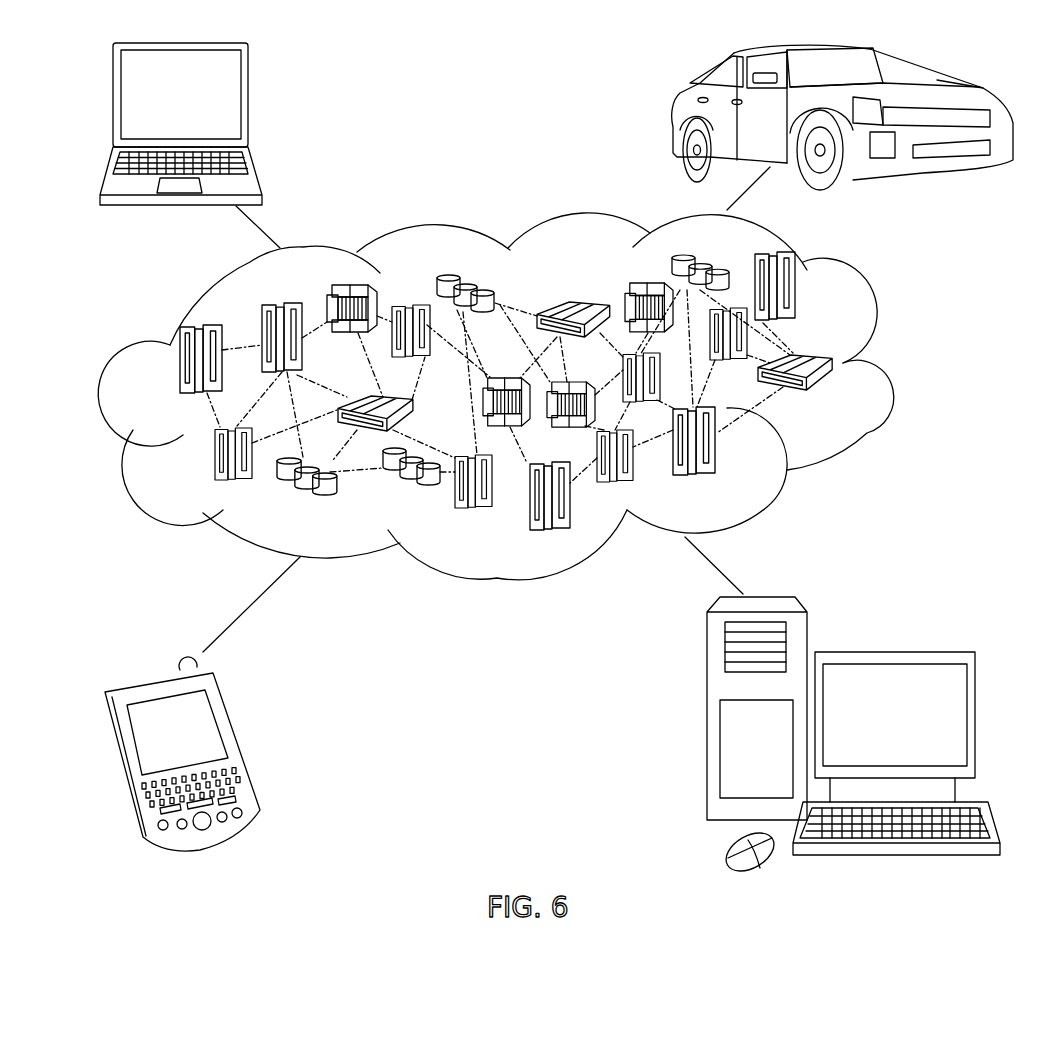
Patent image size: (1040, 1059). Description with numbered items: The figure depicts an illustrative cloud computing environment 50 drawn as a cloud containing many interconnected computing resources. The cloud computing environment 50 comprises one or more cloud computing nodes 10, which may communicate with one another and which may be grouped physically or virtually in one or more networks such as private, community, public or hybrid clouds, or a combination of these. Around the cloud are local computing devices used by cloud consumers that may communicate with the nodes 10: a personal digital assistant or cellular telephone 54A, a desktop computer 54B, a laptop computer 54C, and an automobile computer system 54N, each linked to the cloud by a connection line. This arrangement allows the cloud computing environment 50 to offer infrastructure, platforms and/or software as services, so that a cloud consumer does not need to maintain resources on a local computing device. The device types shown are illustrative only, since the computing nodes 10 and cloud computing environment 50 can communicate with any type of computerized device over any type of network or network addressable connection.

The cloud computing environment 50 is at (524, 396).
The cloud computing node 10 is at (840, 402).
The personal digital assistant or cellular telephone 54A is at (240, 747).
The desktop computer 54B is at (892, 652).
The laptop computer 54C is at (250, 103).
The automobile computer system 54N is at (680, 119).